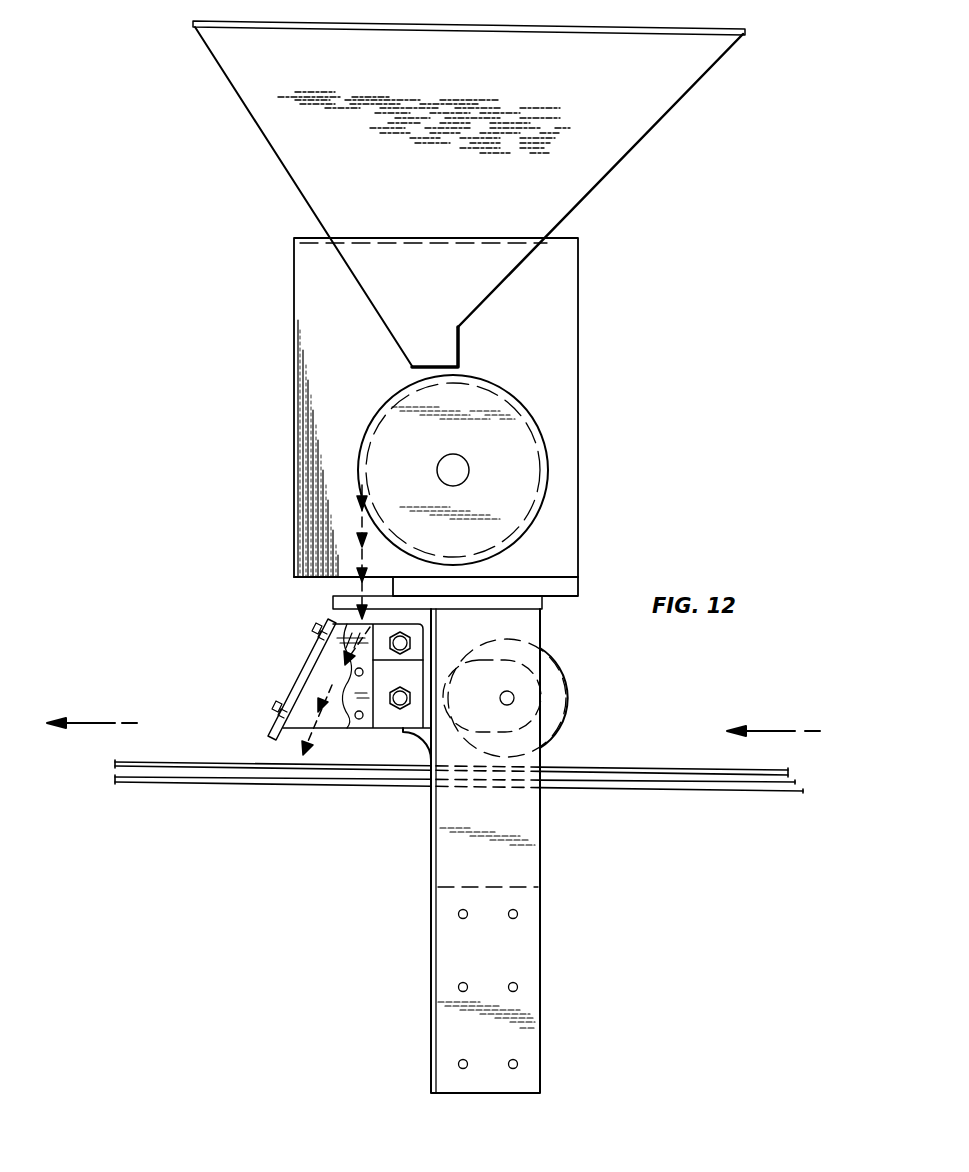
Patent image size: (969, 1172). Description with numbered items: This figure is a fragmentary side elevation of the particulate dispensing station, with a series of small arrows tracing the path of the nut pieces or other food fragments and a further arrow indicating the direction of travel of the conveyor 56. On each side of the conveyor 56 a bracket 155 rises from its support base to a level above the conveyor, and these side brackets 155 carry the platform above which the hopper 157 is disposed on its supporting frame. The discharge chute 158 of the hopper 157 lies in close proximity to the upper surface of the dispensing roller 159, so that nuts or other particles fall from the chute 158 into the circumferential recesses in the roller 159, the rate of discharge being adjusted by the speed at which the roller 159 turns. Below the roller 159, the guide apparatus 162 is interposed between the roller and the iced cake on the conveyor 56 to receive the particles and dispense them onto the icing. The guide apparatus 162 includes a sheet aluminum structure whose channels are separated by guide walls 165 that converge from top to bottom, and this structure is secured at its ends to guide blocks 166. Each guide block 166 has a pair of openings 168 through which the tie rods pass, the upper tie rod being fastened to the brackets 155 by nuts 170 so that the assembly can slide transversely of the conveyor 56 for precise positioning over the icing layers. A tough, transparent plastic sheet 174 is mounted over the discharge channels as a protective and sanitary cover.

The conveyor 56 is at (201, 762).
The bracket 155 is at (447, 815).
The hopper 157 is at (274, 142).
The discharge chute 158 is at (412, 373).
The dispensing roller 159 is at (377, 413).
The guide apparatus 162 is at (642, 707).
The guide wall 165 is at (298, 718).
The guide block 166 is at (403, 724).
The opening 168 is at (407, 640).
The nut 170 is at (407, 652).
The transparent plastic sheet 174 is at (302, 675).